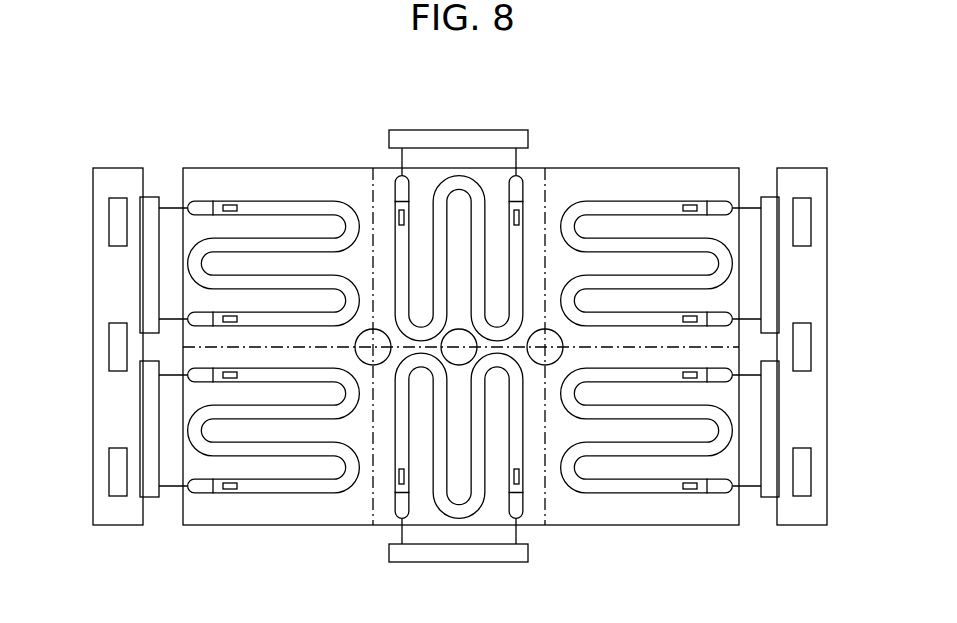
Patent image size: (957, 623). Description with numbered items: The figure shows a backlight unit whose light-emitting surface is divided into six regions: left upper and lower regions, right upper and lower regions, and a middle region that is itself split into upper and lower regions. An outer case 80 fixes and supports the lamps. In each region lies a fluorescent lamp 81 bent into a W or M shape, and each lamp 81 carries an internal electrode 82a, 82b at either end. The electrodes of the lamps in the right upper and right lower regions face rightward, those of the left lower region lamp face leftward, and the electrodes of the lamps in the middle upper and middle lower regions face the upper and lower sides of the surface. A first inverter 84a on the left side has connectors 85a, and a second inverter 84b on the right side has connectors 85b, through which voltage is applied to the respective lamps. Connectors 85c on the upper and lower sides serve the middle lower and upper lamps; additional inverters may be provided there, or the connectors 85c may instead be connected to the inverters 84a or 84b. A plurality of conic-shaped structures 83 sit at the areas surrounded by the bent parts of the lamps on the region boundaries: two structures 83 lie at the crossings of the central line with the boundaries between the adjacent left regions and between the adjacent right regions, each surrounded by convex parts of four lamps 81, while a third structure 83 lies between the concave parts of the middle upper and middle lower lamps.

The outer case 80 is at (632, 167).
The fluorescent lamp 81 is at (331, 201).
The internal electrode 82a is at (232, 205).
The internal electrode 82b is at (231, 316).
The conic-shaped structure 83 is at (458, 365).
The inverter 84a is at (102, 313).
The inverter 84b is at (815, 313).
The connector 85a is at (148, 225).
The connector 85b is at (770, 223).
The connector 85c is at (459, 140).